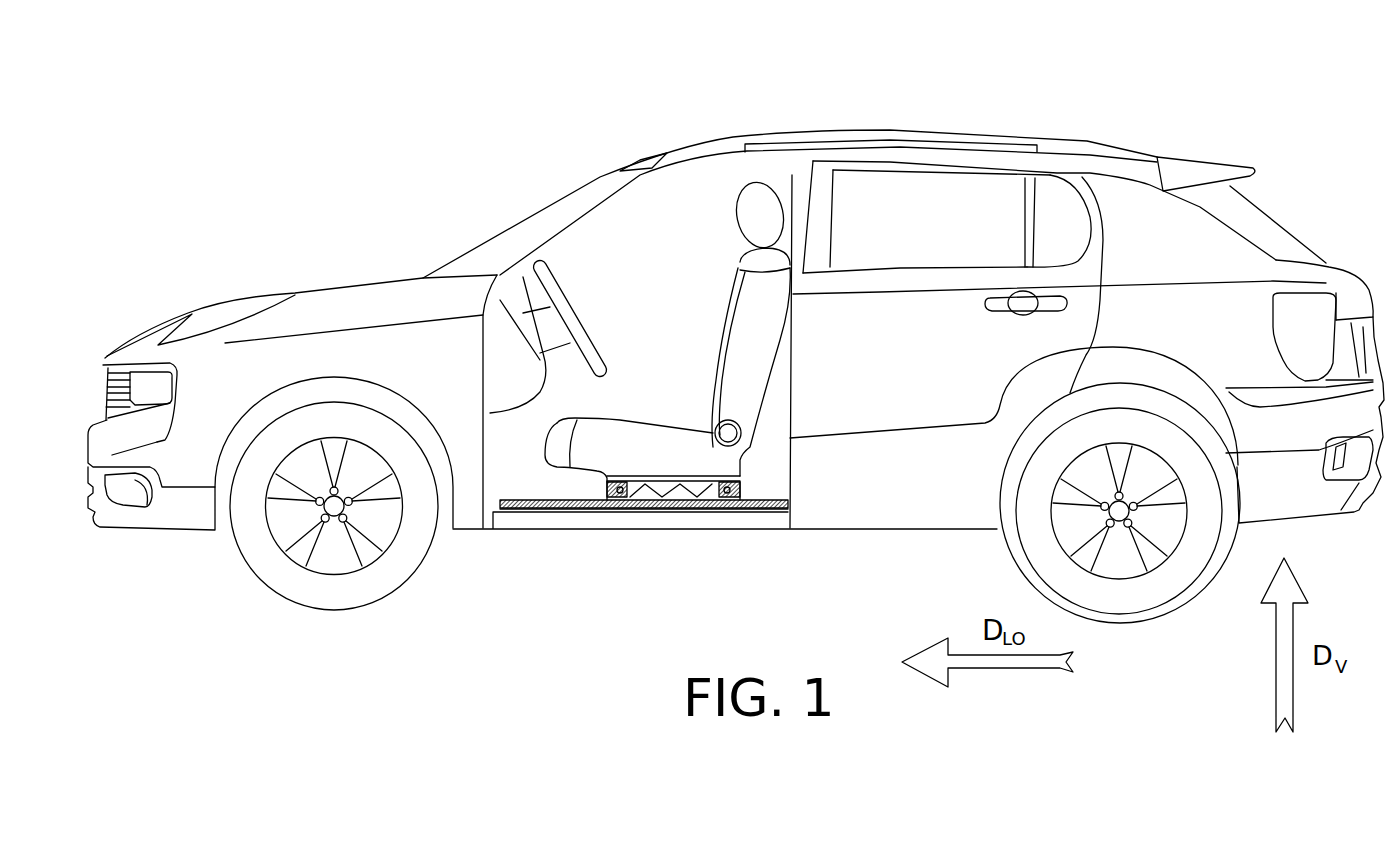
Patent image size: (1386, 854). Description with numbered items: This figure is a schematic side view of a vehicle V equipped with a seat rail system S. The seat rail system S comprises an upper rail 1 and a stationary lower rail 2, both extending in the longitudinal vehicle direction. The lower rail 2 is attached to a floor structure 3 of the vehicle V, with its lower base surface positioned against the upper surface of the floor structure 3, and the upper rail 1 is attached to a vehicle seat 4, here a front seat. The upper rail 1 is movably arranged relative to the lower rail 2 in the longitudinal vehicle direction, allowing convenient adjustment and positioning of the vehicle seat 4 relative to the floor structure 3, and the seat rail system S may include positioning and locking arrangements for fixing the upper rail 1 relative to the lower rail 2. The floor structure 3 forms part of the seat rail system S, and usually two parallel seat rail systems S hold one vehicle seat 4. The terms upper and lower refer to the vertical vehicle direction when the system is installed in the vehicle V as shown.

The upper rail 1 is at (634, 494).
The lower rail 2 is at (765, 507).
The floor structure 3 is at (668, 522).
The vehicle seat 4 is at (757, 297).
The vehicle V is at (1070, 163).
The seat rail system S is at (515, 551).